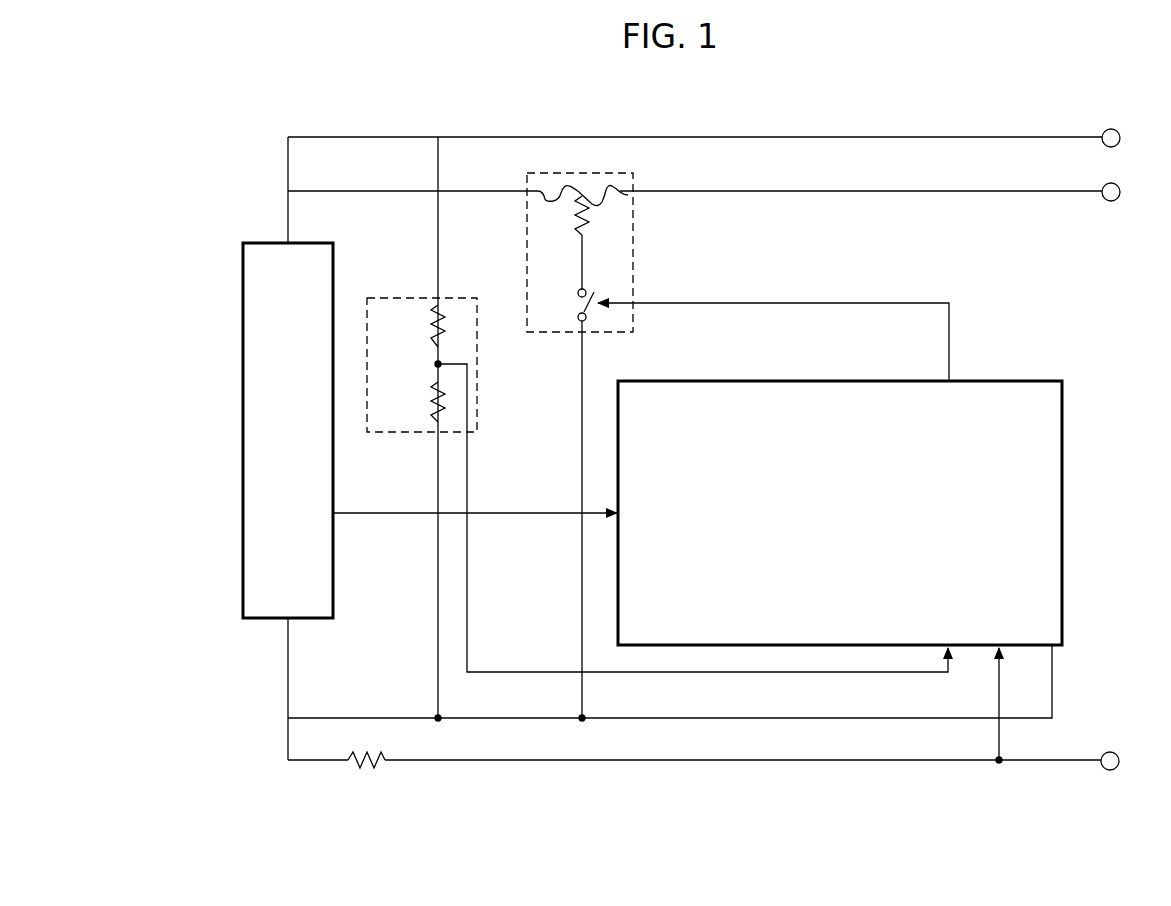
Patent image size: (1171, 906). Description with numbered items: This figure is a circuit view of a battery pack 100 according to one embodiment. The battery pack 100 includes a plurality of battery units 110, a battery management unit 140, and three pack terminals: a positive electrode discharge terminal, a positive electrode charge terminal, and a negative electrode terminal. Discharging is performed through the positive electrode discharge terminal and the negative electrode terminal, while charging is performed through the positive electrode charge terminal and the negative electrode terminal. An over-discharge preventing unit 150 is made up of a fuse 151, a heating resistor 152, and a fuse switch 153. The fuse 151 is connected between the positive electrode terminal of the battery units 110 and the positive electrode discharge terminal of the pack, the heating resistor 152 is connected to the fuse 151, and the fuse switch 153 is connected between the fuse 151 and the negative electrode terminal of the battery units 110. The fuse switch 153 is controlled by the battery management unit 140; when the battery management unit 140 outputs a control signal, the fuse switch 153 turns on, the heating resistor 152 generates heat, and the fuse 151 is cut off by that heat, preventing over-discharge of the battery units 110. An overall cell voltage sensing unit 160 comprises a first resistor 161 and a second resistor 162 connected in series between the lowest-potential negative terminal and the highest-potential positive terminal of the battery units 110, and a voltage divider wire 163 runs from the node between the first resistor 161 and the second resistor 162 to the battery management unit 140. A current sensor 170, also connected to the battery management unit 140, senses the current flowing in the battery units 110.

The battery pack 100 is at (253, 92).
The battery units 110 is at (243, 430).
The battery management unit 140 is at (1017, 381).
The over-discharge preventing unit 150 is at (617, 173).
The fuse 151 is at (560, 186).
The heating resistor 152 is at (578, 209).
The fuse switch 153 is at (578, 302).
The overall cell voltage sensing unit 160 is at (388, 298).
The first resistor 161 is at (430, 323).
The second resistor 162 is at (430, 400).
The voltage divider wire 163 is at (470, 393).
The current sensor 170 is at (366, 770).